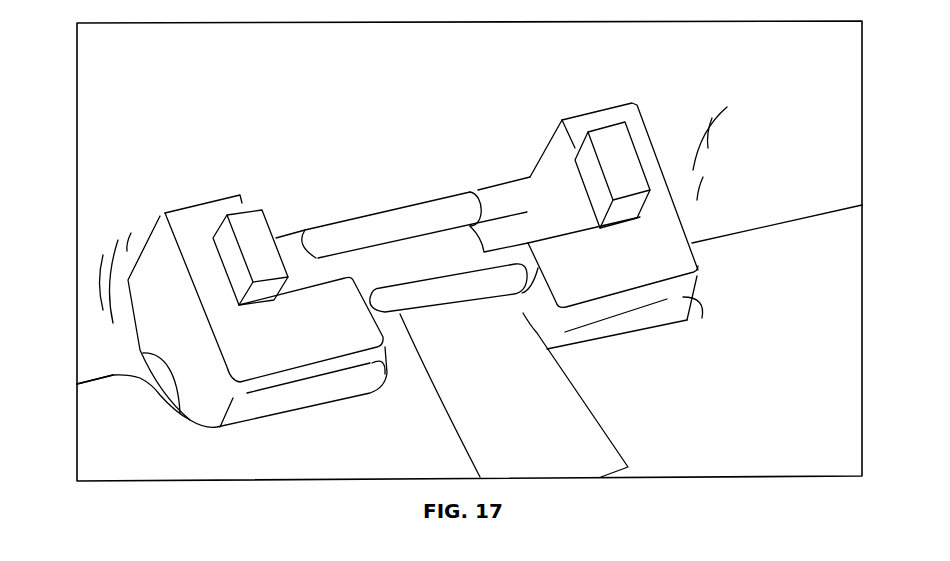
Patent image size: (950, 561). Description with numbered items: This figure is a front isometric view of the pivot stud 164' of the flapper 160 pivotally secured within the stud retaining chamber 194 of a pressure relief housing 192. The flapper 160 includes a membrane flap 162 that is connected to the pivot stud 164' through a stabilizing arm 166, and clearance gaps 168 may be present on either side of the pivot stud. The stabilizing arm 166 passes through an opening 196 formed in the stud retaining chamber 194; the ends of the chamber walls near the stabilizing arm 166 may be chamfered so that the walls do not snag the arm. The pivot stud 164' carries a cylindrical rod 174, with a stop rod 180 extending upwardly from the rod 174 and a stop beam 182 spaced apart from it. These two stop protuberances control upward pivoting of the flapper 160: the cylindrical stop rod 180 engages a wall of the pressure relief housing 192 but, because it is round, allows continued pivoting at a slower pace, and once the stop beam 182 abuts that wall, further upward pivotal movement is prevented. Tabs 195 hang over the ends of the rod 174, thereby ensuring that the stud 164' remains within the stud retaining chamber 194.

The flapper 160 is at (797, 250).
The membrane flap 162 is at (758, 298).
The pivot stud 164' is at (503, 180).
The stabilizing arm 166 is at (487, 388).
The clearance gaps 168 is at (143, 353).
The cylindrical rod 174 is at (293, 250).
The stop rod 180 is at (397, 220).
The stop beam 182 is at (403, 303).
The pressure relief housing 192 is at (64, 224).
The stud retaining chamber 194 is at (156, 222).
The tabs 195 is at (232, 238).
The opening 196 is at (540, 308).